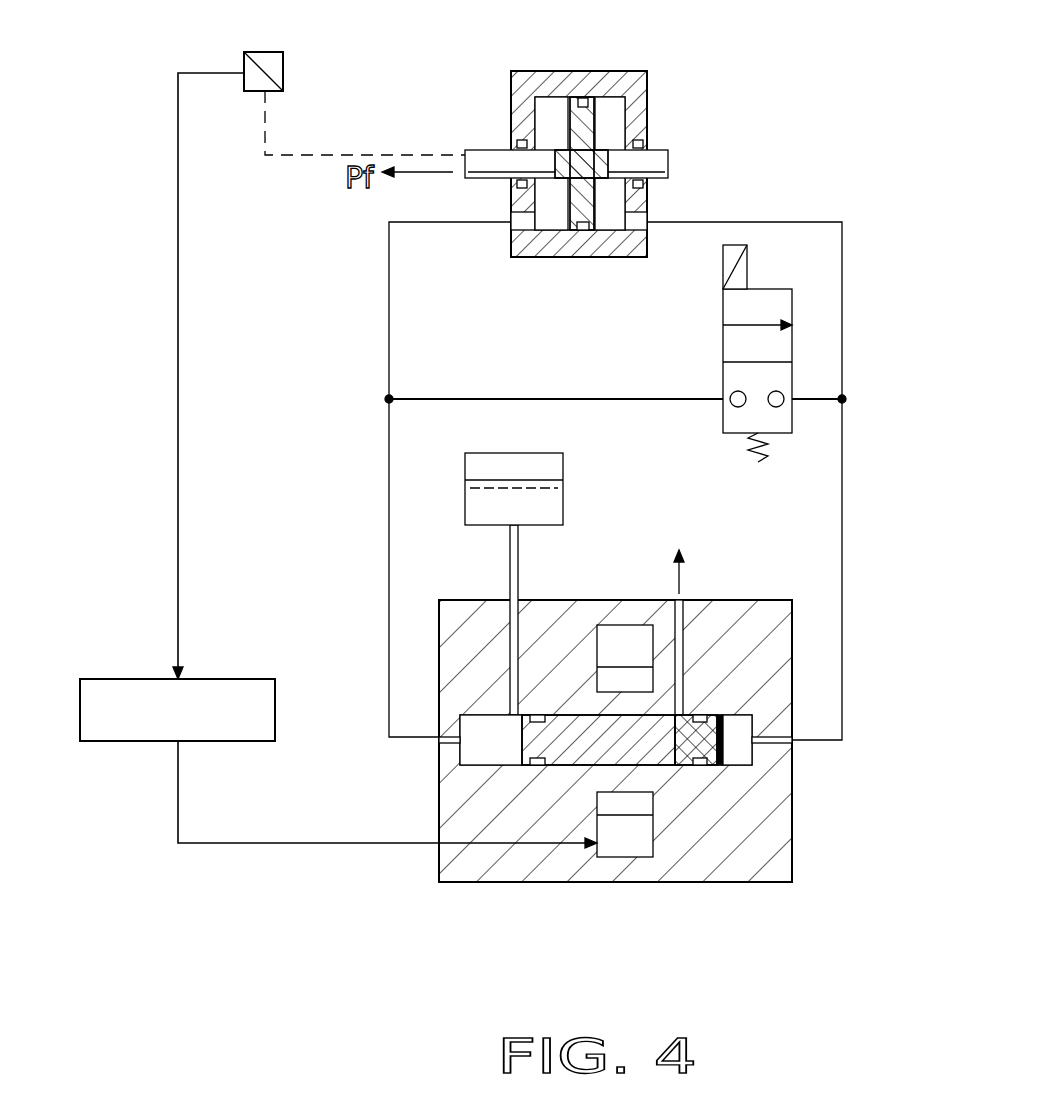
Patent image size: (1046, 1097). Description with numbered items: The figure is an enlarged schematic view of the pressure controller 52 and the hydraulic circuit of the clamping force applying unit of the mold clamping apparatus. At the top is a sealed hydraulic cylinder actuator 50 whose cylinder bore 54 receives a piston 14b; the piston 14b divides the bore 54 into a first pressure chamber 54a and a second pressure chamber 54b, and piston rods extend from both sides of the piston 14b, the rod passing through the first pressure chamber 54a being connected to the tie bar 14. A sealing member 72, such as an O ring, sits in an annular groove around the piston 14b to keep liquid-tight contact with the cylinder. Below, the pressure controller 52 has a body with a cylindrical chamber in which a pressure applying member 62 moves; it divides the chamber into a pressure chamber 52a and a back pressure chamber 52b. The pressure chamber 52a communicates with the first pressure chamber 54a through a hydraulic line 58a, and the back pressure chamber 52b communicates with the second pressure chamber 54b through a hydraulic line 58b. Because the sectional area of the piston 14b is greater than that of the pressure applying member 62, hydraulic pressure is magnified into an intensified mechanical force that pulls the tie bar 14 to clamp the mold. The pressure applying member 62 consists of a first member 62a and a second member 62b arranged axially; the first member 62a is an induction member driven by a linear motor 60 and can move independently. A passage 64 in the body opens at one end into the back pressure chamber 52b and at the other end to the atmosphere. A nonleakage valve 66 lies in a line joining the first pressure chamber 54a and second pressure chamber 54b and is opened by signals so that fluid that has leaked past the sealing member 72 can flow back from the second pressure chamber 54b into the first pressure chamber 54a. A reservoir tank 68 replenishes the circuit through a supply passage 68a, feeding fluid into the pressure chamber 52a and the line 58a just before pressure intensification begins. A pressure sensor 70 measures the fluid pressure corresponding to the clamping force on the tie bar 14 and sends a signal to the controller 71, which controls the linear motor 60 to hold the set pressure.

The tie bar 14 is at (485, 152).
The piston 14b is at (597, 112).
The sealed hydraulic cylinder actuator 50 is at (593, 164).
The cylinder bore 54 is at (548, 133).
The first pressure chamber 54a is at (548, 228).
The second pressure chamber 54b is at (610, 228).
The sealing member 72 is at (583, 240).
The pressure controller 52 is at (802, 856).
The pressure chamber 52a is at (474, 756).
The back pressure chamber 52b is at (778, 770).
The hydraulic line 58a is at (388, 443).
The hydraulic line 58b is at (845, 470).
The linear motor 60 is at (620, 850).
The pressure applying member 62 is at (599, 836).
The first member 62a is at (552, 764).
The second member 62b is at (681, 767).
The passage 64 is at (688, 602).
The nonleakage valve 66 is at (716, 351).
The reservoir tank 68 is at (566, 472).
The supply passage 68a is at (524, 605).
The pressure sensor 70 is at (265, 52).
The controller 71 is at (243, 679).